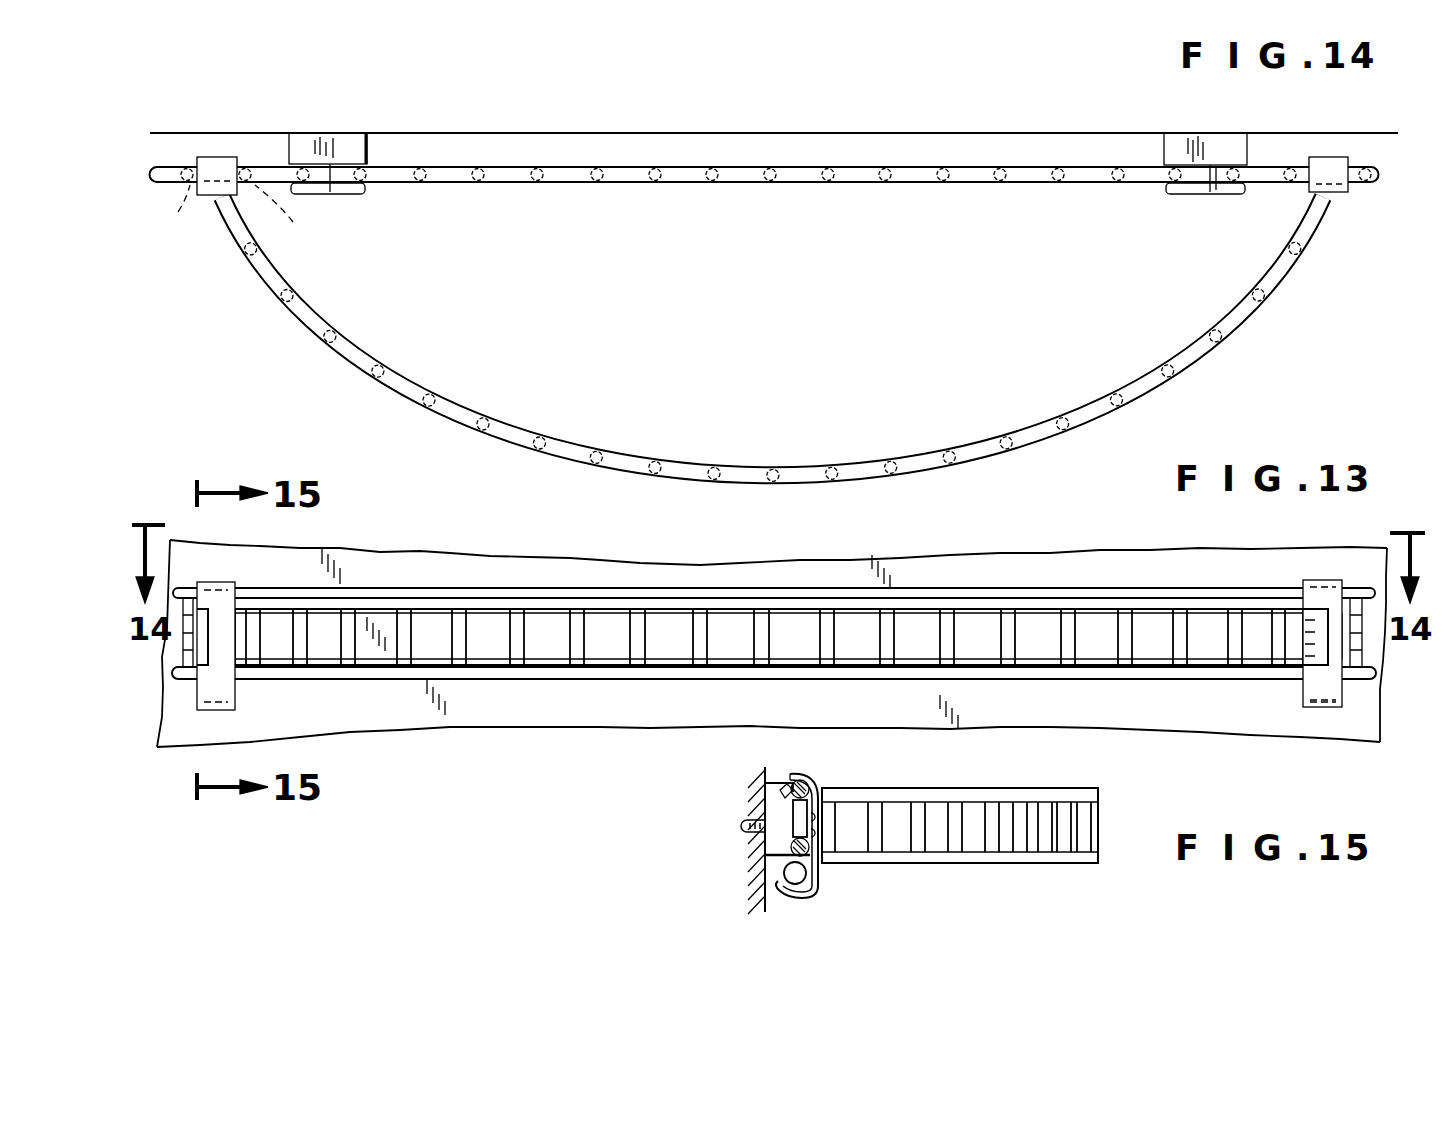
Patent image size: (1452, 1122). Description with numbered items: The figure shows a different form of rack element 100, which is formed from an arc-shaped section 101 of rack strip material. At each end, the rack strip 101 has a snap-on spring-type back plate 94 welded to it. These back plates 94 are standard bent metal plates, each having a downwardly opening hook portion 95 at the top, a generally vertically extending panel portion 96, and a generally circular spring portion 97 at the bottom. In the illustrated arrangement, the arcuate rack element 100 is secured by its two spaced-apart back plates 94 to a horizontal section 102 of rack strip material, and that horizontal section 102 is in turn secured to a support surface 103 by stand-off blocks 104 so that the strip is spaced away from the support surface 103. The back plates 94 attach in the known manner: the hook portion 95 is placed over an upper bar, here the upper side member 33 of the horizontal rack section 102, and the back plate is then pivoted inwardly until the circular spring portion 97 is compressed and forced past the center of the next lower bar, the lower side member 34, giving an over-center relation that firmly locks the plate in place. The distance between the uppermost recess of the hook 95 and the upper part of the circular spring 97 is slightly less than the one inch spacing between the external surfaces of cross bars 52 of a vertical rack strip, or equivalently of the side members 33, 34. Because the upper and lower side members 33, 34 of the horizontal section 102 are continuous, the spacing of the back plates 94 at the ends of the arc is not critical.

In FIG. 13, the side member 33 is at (1110, 587).
In FIG. 15, the side member 33 is at (790, 777).
In FIG. 13, the side member 34 is at (1150, 643).
In FIG. 15, the side member 34 is at (750, 846).
In FIG. 14, the cross bar 52 is at (237, 213).
In FIG. 14, the back plate 94 is at (218, 167).
In FIG. 15, the back plate 94 is at (816, 778).
In FIG. 13, the hook portion 95 is at (1322, 580).
In FIG. 15, the hook portion 95 is at (808, 773).
In FIG. 13, the panel portion 96 is at (1305, 637).
In FIG. 15, the panel portion 96 is at (823, 828).
In FIG. 13, the circular spring portion 97 is at (1318, 692).
In FIG. 15, the circular spring portion 97 is at (782, 880).
In FIG. 14, the rack element 100 is at (772, 339).
In FIG. 14, the arc-shaped section 101 is at (852, 466).
In FIG. 14, the horizontal section 102 is at (688, 176).
In FIG. 14, the support surface 103 is at (940, 133).
In FIG. 14, the stand-off block 104 is at (342, 152).